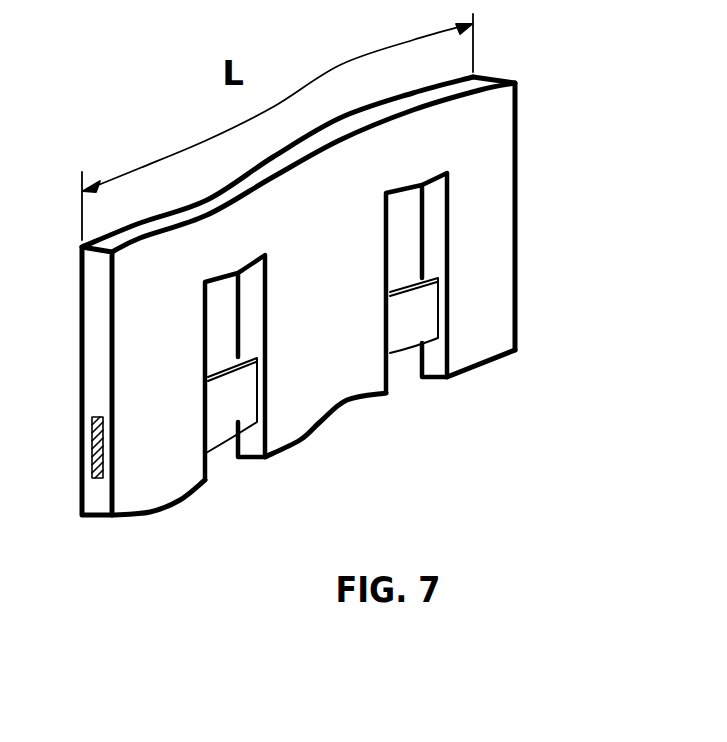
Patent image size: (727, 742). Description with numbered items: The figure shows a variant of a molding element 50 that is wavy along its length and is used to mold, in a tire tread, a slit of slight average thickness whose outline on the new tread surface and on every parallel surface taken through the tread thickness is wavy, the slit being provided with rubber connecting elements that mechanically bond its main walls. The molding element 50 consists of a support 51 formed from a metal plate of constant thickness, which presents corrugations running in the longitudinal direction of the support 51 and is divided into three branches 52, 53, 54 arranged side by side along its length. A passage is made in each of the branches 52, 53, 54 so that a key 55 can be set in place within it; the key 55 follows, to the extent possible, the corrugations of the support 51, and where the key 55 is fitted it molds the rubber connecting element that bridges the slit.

The molding element 50 is at (310, 331).
The support 51 is at (140, 320).
The branch 52 is at (147, 470).
The branch 53 is at (335, 378).
The branch 54 is at (473, 340).
The key 55 is at (223, 415).